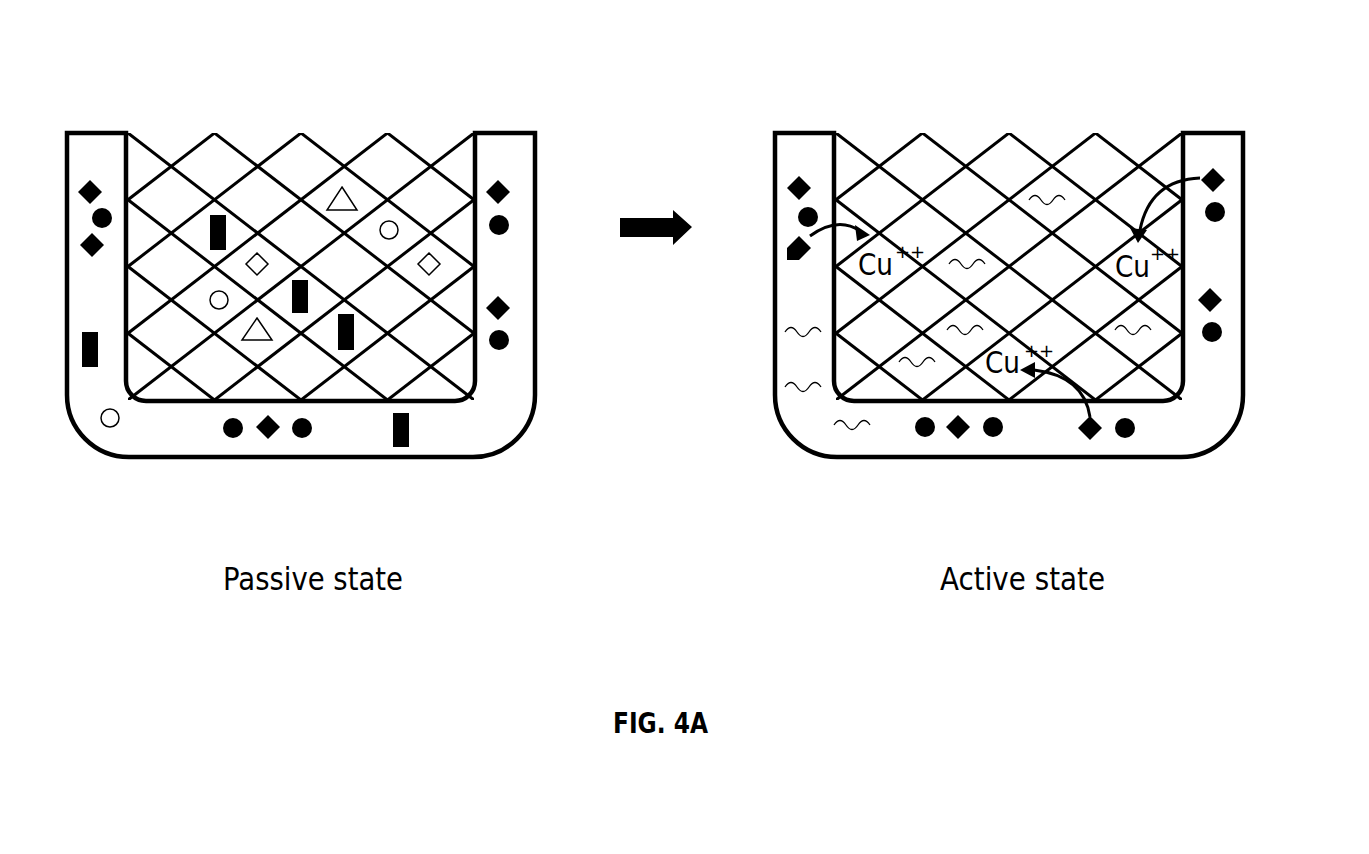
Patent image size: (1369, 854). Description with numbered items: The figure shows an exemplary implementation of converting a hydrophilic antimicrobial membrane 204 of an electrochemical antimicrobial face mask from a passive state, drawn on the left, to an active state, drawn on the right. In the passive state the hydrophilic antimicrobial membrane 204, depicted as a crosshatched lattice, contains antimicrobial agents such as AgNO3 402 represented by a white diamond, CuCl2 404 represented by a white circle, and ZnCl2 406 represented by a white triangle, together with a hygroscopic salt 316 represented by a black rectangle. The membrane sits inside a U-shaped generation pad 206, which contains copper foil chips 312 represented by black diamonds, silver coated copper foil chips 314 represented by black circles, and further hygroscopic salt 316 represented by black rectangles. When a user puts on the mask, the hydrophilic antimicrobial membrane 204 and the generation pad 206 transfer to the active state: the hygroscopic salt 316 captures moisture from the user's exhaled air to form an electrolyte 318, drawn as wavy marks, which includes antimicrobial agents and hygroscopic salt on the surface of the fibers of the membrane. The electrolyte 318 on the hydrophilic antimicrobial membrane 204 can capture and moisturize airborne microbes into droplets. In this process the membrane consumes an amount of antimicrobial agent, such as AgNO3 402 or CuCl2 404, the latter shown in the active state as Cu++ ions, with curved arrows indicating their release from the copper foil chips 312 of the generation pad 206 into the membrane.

The hydrophilic antimicrobial membrane 204 is at (218, 145).
The generation pad 206 is at (537, 192).
The copper foil chips 312 is at (508, 305).
The silver coated copper foil chips 314 is at (508, 336).
The hygroscopic salt 316 is at (345, 350).
The electrolyte 318 is at (958, 260).
The AgNO3 402 is at (432, 252).
The CuCl2 404 is at (391, 220).
The ZnCl2 406 is at (349, 186).